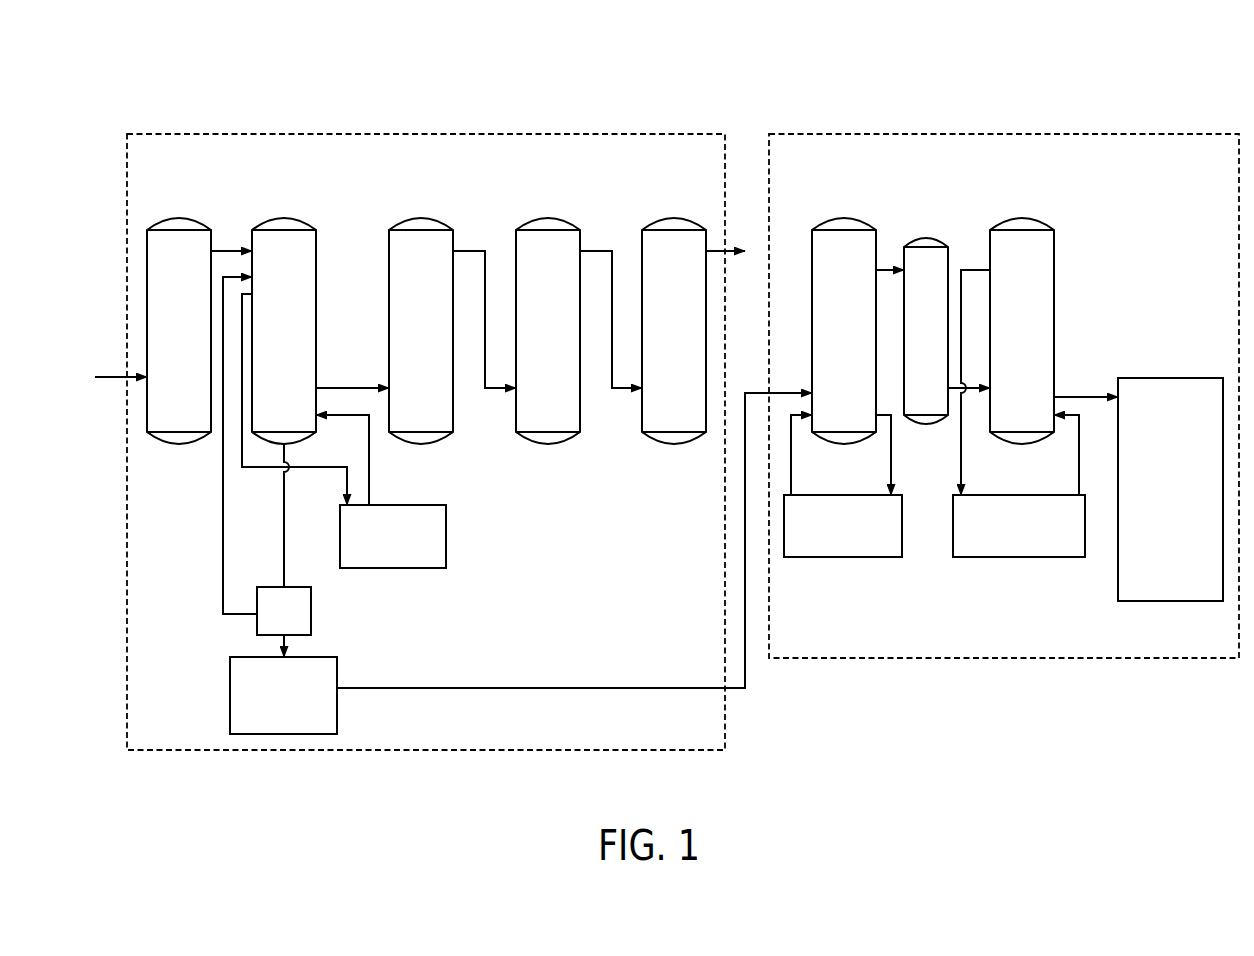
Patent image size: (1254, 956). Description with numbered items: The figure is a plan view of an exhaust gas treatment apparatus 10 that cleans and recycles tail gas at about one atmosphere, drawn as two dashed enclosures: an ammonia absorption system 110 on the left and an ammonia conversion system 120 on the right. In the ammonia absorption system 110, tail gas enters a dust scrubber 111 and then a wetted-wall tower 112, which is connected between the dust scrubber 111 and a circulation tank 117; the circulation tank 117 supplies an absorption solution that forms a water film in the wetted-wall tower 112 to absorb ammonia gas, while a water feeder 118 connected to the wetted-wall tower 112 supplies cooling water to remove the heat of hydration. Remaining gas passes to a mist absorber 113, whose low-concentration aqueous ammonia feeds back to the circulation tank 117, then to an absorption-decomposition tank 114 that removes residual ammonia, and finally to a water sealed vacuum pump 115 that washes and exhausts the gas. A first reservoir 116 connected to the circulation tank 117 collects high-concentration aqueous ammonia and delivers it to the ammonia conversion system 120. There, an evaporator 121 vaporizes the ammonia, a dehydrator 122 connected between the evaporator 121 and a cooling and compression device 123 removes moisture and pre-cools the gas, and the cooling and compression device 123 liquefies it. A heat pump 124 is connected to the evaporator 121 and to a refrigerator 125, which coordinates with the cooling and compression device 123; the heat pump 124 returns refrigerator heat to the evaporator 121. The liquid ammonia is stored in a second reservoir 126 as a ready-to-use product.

The exhaust gas treatment apparatus 10 is at (167, 93).
The ammonia absorption system 110 is at (533, 134).
The dust scrubber 111 is at (178, 221).
The wetted-wall tower 112 is at (283, 221).
The mist absorber 113 is at (418, 220).
The absorption-decomposition tank 114 is at (545, 220).
The water sealed vacuum pump 115 is at (670, 220).
The first reservoir 116 is at (230, 697).
The circulation tank 117 is at (311, 612).
The water feeder 118 is at (447, 540).
The ammonia conversion system 120 is at (926, 134).
The evaporator 121 is at (841, 220).
The dehydrator 122 is at (922, 237).
The cooling and compression device 123 is at (1017, 220).
The heat pump 124 is at (845, 557).
The refrigerator 125 is at (1022, 557).
The second reservoir 126 is at (1163, 378).